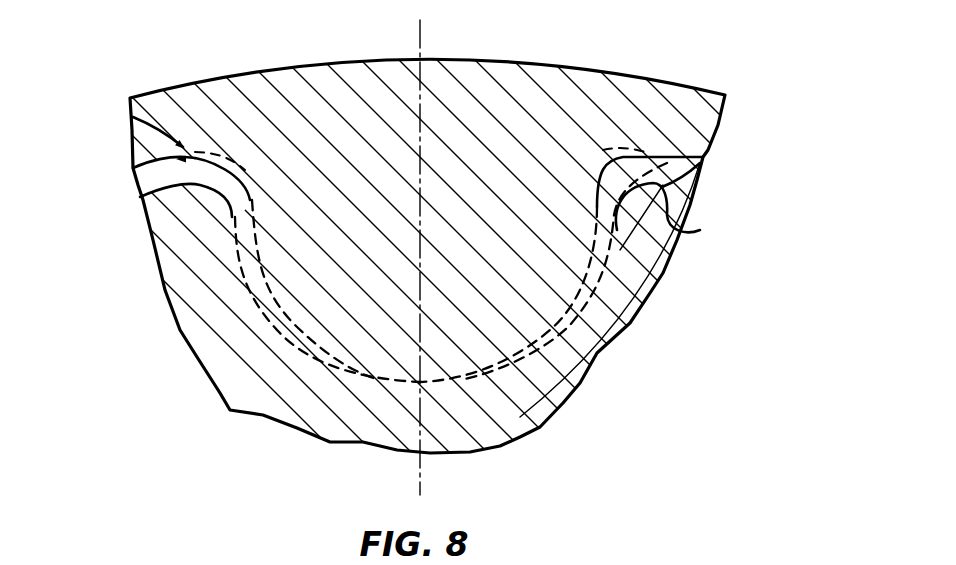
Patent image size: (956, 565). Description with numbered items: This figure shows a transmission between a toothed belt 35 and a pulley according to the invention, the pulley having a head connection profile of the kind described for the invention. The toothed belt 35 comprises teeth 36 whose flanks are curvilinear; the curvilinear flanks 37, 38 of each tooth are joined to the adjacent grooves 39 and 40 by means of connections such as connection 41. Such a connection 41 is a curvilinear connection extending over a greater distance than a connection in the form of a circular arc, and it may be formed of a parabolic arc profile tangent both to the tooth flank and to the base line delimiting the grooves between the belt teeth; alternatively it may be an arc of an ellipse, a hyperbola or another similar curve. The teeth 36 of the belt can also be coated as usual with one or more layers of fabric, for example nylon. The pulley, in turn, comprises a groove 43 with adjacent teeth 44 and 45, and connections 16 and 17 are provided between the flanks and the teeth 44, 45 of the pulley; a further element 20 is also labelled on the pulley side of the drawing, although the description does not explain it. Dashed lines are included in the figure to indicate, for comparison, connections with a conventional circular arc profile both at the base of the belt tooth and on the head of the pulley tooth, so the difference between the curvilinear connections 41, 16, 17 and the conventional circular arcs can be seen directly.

The toothed belt 35 is at (585, 92).
The teeth 36 is at (350, 317).
The curvilinear flank 37 is at (575, 299).
The curvilinear flank 38 is at (258, 265).
The groove 39 is at (703, 152).
The groove 40 is at (131, 112).
The connection 41 is at (618, 152).
The groove 43 is at (403, 387).
The tooth 44 is at (688, 200).
The tooth 45 is at (140, 190).
The connection 16 is at (703, 183).
The connection 17 is at (203, 196).
The bead 20 is at (700, 230).